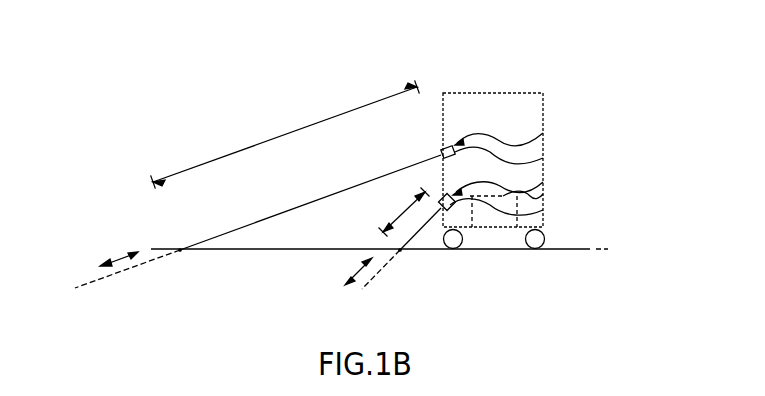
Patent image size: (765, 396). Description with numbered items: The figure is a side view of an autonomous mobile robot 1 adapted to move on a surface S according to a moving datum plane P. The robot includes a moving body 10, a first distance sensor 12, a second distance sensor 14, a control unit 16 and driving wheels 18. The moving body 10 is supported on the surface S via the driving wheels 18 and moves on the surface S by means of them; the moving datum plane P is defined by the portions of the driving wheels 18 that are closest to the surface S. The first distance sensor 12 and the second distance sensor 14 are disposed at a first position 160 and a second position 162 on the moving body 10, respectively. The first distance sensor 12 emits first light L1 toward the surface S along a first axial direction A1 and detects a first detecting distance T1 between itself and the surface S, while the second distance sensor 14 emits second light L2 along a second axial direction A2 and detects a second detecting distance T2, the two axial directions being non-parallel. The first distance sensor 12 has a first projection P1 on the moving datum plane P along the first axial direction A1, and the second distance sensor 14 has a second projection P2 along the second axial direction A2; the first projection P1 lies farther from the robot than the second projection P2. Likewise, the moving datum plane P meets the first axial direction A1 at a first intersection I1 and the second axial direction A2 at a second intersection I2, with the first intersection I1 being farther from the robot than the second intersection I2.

The autonomous mobile robot 1 is at (513, 168).
The moving body 10 is at (543, 104).
The first distance sensor 12 is at (543, 159).
The second distance sensor 14 is at (543, 210).
The control unit 16 is at (543, 194).
The driving wheels 18 is at (535, 250).
The first position 160 is at (543, 134).
The second position 162 is at (543, 182).
The first light L1 is at (310, 202).
The second light L2 is at (427, 227).
The first detecting distance T1 is at (285, 134).
The second detecting distance T2 is at (404, 212).
The first projection P1 is at (180, 251).
The second projection P2 is at (401, 251).
The first intersection I1 is at (177, 252).
The second intersection I2 is at (397, 254).
The first axial direction A1 is at (119, 253).
The second axial direction A2 is at (352, 271).
The surface S is at (283, 250).
The moving datum plane P is at (596, 251).